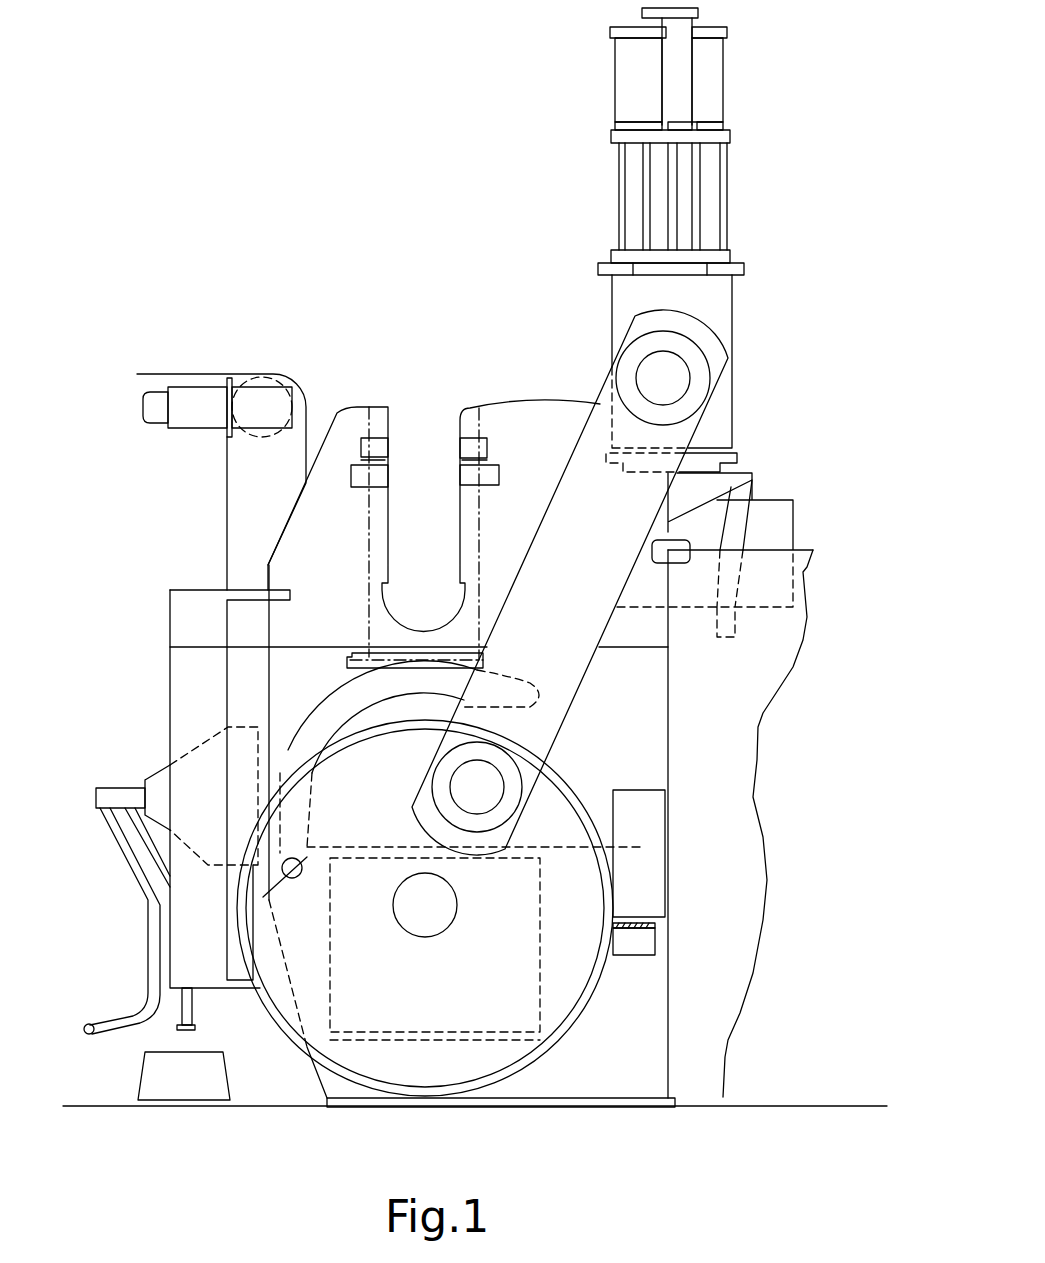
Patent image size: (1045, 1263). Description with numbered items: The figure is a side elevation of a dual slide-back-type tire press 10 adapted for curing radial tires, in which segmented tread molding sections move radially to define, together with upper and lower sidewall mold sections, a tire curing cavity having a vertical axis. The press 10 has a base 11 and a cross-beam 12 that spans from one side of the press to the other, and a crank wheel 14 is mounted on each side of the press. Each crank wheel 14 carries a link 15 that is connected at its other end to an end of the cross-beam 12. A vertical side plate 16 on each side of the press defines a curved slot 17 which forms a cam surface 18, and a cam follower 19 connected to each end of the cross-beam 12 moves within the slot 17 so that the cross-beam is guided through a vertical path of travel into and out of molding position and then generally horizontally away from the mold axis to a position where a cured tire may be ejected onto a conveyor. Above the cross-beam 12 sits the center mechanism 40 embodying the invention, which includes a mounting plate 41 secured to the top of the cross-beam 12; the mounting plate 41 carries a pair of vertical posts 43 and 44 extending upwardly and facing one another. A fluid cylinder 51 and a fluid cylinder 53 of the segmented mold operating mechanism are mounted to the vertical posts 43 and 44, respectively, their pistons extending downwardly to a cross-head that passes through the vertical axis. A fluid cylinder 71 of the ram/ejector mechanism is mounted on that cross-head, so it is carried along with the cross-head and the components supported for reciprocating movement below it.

The tire press 10 is at (320, 207).
The base 11 is at (668, 1000).
The cross-beam 12 is at (732, 317).
The crank wheel 14 is at (557, 947).
The link 15 is at (588, 603).
The vertical side plate 16 is at (342, 440).
The curved slot 17 is at (323, 705).
The cam surface 18 is at (322, 683).
The cam follower 19 is at (290, 872).
The center mechanism 40 is at (788, 146).
The mounting plate 41 is at (731, 254).
The vertical post 43 is at (660, 178).
The vertical post 44 is at (632, 214).
The fluid cylinder 51 is at (720, 62).
The fluid cylinder 53 is at (627, 87).
The fluid cylinder 71 is at (683, 83).